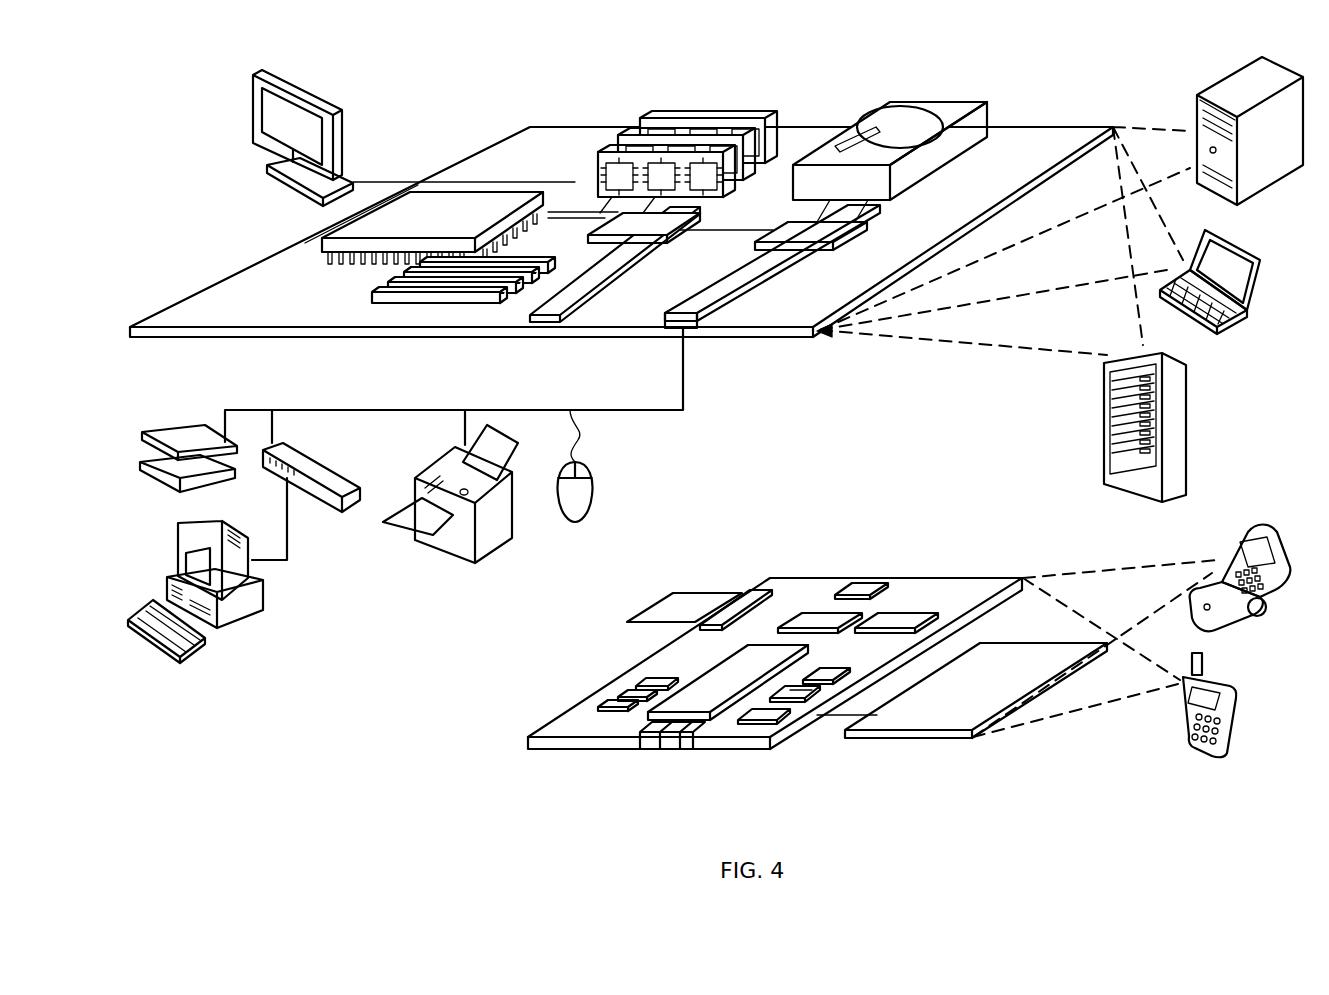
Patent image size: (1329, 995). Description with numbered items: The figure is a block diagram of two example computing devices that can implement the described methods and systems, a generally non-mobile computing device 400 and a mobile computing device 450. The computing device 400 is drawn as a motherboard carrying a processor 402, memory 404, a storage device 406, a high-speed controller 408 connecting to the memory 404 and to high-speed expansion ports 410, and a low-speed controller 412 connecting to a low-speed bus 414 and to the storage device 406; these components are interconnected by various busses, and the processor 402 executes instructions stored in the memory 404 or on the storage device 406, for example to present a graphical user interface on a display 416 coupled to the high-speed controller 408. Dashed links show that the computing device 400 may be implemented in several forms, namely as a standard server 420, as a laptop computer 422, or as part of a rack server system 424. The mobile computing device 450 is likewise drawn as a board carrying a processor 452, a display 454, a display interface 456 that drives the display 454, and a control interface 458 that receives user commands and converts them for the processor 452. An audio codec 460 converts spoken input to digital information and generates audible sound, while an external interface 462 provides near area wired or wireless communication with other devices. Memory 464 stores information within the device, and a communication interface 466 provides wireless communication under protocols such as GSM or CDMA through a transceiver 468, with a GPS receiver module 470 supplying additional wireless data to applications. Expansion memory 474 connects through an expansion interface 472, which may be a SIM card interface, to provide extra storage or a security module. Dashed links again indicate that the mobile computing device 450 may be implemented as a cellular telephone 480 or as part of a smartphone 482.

The computing device 400 is at (167, 88).
The processor 402 is at (322, 242).
The memory 404 is at (650, 135).
The storage device 406 is at (874, 116).
The high-speed controller 408 is at (622, 224).
The high-speed expansion ports 410 is at (400, 299).
The low-speed controller 412 is at (792, 227).
The low-speed bus 414 is at (700, 328).
The display 416 is at (262, 80).
The standard server 420 is at (1197, 108).
The laptop computer 422 is at (1258, 260).
The rack server system 424 is at (1104, 449).
The computing device 450 is at (506, 747).
The processor 452 is at (702, 707).
The display 454 is at (938, 723).
The display interface 456 is at (777, 710).
The control interface 458 is at (802, 692).
The audio codec 460 is at (827, 670).
The external interface 462 is at (667, 738).
The memory 464 is at (628, 700).
The communication interface 466 is at (822, 617).
The transceiver 468 is at (900, 613).
The GPS receiver module 470 is at (872, 584).
The expansion interface 472 is at (750, 593).
The expansion memory 474 is at (678, 593).
The cellular telephone 480 is at (1245, 535).
The smartphone 482 is at (1181, 700).